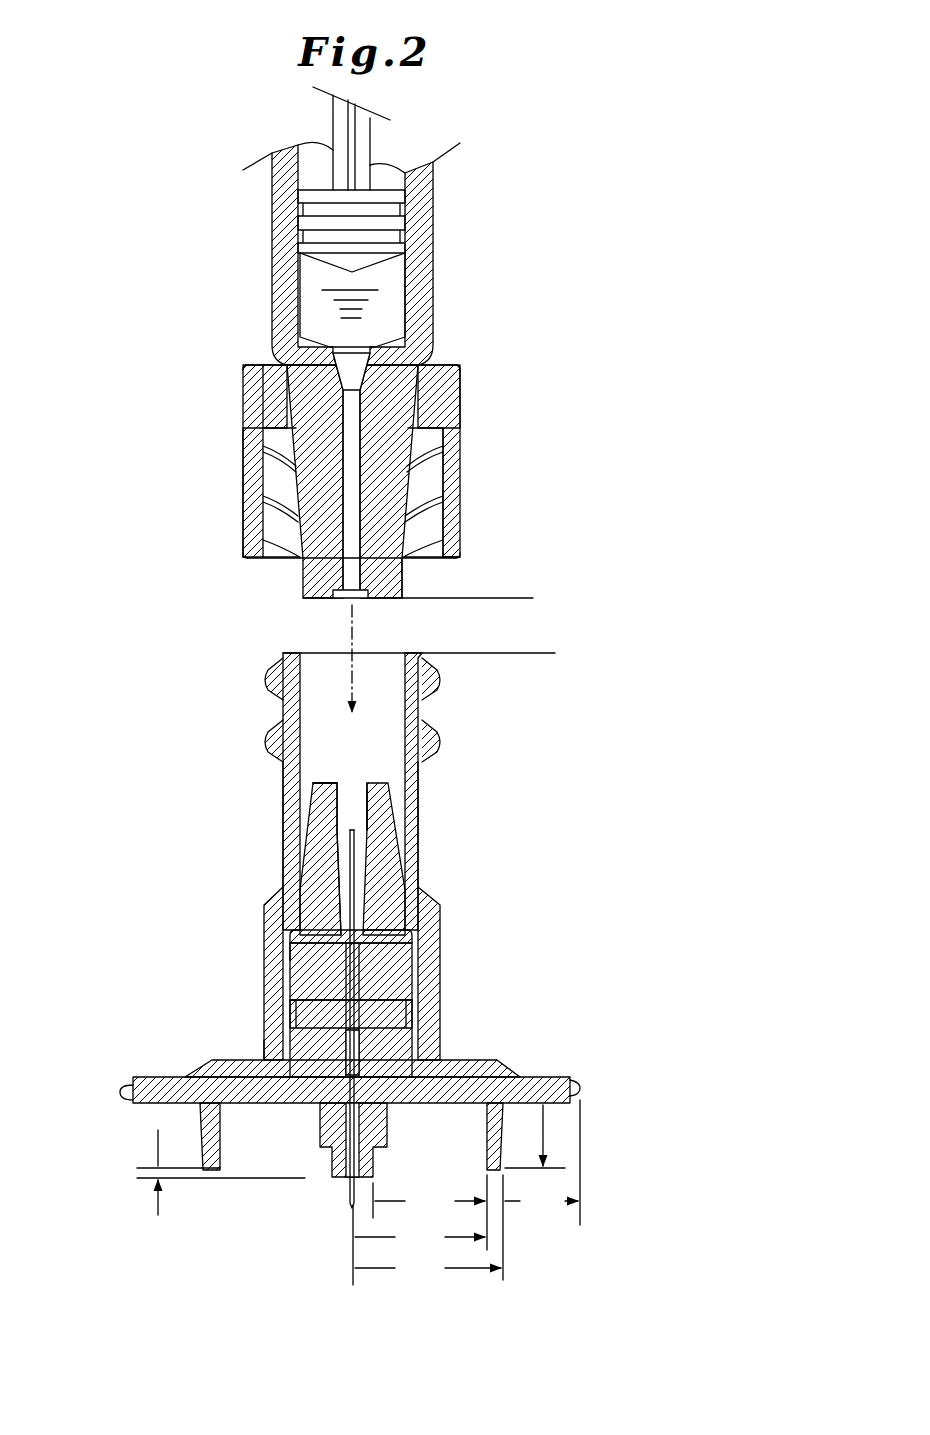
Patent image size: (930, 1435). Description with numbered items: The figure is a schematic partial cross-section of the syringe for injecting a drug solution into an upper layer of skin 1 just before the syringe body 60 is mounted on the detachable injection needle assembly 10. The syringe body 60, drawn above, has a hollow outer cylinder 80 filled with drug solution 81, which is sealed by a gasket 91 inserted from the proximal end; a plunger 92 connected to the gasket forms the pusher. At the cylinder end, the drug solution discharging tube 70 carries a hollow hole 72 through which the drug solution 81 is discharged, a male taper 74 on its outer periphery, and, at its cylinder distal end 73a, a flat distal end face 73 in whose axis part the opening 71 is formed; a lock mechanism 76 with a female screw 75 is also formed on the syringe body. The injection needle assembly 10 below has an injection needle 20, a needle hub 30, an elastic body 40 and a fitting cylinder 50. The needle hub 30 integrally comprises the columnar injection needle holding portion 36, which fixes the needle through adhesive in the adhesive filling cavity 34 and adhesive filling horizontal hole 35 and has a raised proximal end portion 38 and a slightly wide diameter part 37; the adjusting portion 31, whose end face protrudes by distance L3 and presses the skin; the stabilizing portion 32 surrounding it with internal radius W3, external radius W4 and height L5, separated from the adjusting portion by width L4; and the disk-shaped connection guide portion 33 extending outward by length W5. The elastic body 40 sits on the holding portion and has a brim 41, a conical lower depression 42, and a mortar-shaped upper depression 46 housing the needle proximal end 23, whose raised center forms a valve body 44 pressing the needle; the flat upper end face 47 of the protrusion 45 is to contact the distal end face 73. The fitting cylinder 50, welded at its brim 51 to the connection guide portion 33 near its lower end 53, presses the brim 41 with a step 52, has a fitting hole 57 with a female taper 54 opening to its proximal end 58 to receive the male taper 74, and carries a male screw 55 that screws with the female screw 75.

The syringe for injecting a drug solution into an upper layer of skin 1 is at (560, 141).
The injection needle assembly 10 is at (100, 740).
The injection needle 20 is at (343, 1192).
The needle proximal end 23 is at (362, 796).
The needle hub 30 is at (303, 972).
The adjusting portion 31 is at (366, 1165).
The stabilizing portion 32 is at (213, 1138).
The connection guide portion 33 is at (130, 1098).
The adhesive filling cavity 34 is at (360, 1063).
The adhesive filling horizontal hole 35 is at (400, 1017).
The injection needle holding portion 36 is at (395, 981).
The slightly wide diameter part 37 is at (293, 950).
The proximal end portion 38 is at (337, 935).
The elastic body 40 is at (314, 860).
The brim 41 is at (397, 940).
The lower depression 42 is at (383, 893).
The valve body 44 is at (345, 840).
The protrusion 45 is at (322, 808).
The upper depression 46 is at (357, 783).
The upper end face 47 is at (325, 783).
The fitting cylinder 50 is at (276, 765).
The brim 51 is at (255, 1062).
The step 52 is at (270, 912).
The sleeve lower end 53 is at (270, 1060).
The female taper 54 is at (403, 803).
The male screw 55 is at (440, 681).
The fitting hole 57 is at (362, 672).
The proximal end 58 is at (439, 653).
The syringe body 60 is at (152, 87).
The drug solution discharging tube 70 is at (293, 490).
The opening 71 is at (345, 600).
The hollow hole 72 is at (352, 583).
The distal end face 73 is at (398, 599).
The cylinder distal end 73a is at (493, 599).
The male taper 74 is at (403, 580).
The female screw 75 is at (431, 488).
The lock mechanism 76 is at (445, 370).
The outer cylinder 80 is at (268, 243).
The drug solution 81 is at (388, 313).
The gasket 91 is at (392, 225).
The plunger 92 is at (363, 153).
The protruding distance L3 is at (221, 1191).
The width L4 is at (430, 1212).
The height L5 is at (535, 1136).
The internal radius W3 is at (419, 1245).
The external radius W4 is at (429, 1231).
The length (width) W5 is at (542, 1164).